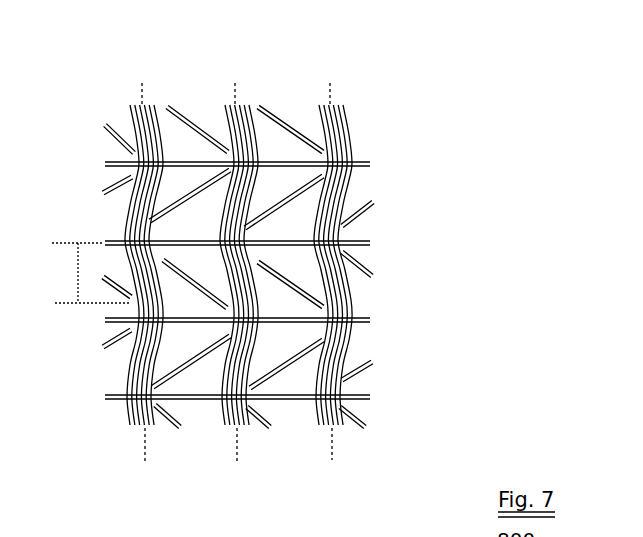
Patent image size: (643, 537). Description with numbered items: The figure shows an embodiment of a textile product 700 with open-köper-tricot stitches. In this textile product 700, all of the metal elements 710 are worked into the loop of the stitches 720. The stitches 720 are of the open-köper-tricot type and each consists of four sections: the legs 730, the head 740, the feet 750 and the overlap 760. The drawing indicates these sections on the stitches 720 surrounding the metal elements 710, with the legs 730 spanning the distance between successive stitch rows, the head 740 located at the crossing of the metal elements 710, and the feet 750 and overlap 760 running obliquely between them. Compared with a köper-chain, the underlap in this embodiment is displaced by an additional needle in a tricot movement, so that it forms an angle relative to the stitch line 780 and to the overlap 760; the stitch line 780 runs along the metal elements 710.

The three-dimensional fabric structure 700 is at (460, 100).
The metal elements 710 is at (325, 103).
The stitches 720 is at (358, 238).
The legs 730 is at (79, 273).
The head 740 is at (125, 222).
The feet 750 is at (182, 289).
The overlap 760 is at (182, 327).
The stitch line 780 is at (332, 432).